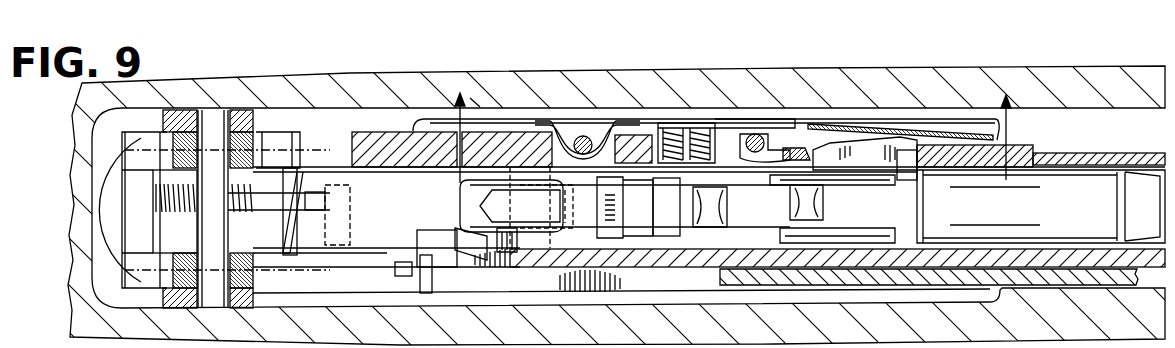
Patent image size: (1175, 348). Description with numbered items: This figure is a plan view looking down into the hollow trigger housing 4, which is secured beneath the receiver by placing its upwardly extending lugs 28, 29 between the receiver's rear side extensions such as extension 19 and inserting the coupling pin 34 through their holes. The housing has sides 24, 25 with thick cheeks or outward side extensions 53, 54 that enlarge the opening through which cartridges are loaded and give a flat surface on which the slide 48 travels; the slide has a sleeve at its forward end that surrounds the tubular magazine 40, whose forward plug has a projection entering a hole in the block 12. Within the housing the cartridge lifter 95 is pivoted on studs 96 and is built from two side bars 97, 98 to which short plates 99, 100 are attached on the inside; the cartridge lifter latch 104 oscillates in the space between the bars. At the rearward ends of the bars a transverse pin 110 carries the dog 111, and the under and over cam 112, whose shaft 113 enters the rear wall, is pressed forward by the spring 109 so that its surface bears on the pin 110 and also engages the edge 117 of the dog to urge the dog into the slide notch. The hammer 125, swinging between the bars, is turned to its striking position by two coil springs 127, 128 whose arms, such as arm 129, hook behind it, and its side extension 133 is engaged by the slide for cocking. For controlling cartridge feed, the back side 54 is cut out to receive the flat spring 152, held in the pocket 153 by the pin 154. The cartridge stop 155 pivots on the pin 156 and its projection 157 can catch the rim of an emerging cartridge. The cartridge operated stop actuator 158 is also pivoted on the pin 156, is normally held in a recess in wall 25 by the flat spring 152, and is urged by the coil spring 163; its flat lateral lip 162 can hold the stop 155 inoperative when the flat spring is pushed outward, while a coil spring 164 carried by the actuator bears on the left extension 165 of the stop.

The trigger housing 4 is at (102, 220).
The block 12 is at (734, 127).
The rear side extension 19 is at (170, 121).
The side of trigger housing 24 is at (558, 260).
The side of trigger housing 25 is at (513, 140).
The upwardly extending lug 28 is at (190, 250).
The upwardly extending lug 29 is at (254, 142).
The coupling pin 34 is at (216, 228).
The tubular magazine 40 is at (1105, 155).
The slide 48 is at (1097, 290).
The cheek 53 is at (402, 275).
The cheek 54 is at (418, 118).
The cartridge lifter 95 is at (835, 186).
The stud 96 is at (413, 140).
The side bar 97 is at (882, 238).
The side bar 98 is at (865, 148).
The short plate 99 is at (740, 228).
The short plate 100 is at (741, 185).
The cartridge lifter latch 104 is at (665, 218).
The spring 109 is at (165, 175).
The transverse pin 110 is at (333, 225).
The dog 111 is at (295, 237).
The under and over cam 112 is at (288, 195).
The shaft 113 is at (162, 205).
The edge of dog 117 is at (313, 203).
The hammer 125 is at (540, 214).
The coil spring 127 is at (507, 237).
The coil spring 128 is at (500, 183).
The spring arm 129 is at (477, 258).
The side extension of hammer 133 is at (427, 270).
The flat spring 152 is at (747, 120).
The pocket 153 is at (600, 138).
The pin 154 is at (575, 130).
The cartridge stop 155 is at (877, 137).
The pin 156 is at (757, 133).
The projection 157 is at (900, 170).
The cartridge operated stop actuator 158 is at (772, 130).
The flat lateral lip 162 is at (787, 150).
The coil spring 163 is at (667, 137).
The coil spring 164 is at (715, 130).
The left extension 165 is at (697, 123).